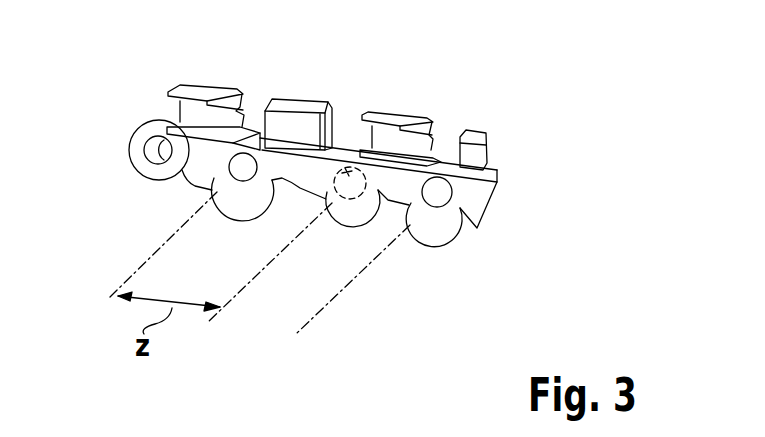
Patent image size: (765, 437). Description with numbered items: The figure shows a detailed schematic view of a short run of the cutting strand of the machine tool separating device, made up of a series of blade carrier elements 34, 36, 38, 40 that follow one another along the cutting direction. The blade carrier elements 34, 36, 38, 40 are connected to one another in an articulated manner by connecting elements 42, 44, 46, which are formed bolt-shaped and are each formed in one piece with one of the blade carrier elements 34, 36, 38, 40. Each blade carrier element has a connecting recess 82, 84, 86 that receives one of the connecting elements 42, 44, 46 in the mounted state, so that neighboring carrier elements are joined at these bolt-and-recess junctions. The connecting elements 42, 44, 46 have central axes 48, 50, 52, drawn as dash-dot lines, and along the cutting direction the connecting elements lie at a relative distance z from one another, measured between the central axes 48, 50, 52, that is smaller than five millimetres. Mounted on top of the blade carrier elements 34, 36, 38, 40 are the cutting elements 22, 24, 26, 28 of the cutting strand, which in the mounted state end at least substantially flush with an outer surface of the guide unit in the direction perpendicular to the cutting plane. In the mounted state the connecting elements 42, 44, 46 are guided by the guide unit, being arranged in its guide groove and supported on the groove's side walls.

The cutting element 22 is at (213, 97).
The cutting element 24 is at (313, 97).
The cutting element 26 is at (403, 117).
The cutting element 28 is at (472, 130).
The blade carrier element 34 is at (167, 180).
The blade carrier element 36 is at (282, 180).
The blade carrier element 38 is at (377, 207).
The blade carrier element 40 is at (470, 192).
The connecting element 42 is at (243, 167).
The connecting element 44 is at (350, 168).
The connecting element 46 is at (438, 192).
The central axis 48 is at (157, 252).
The central axis 50 is at (249, 283).
The central axis 52 is at (330, 297).
The connecting recess 82 is at (153, 137).
The connecting recess 84 is at (228, 186).
The connecting recess 86 is at (435, 205).